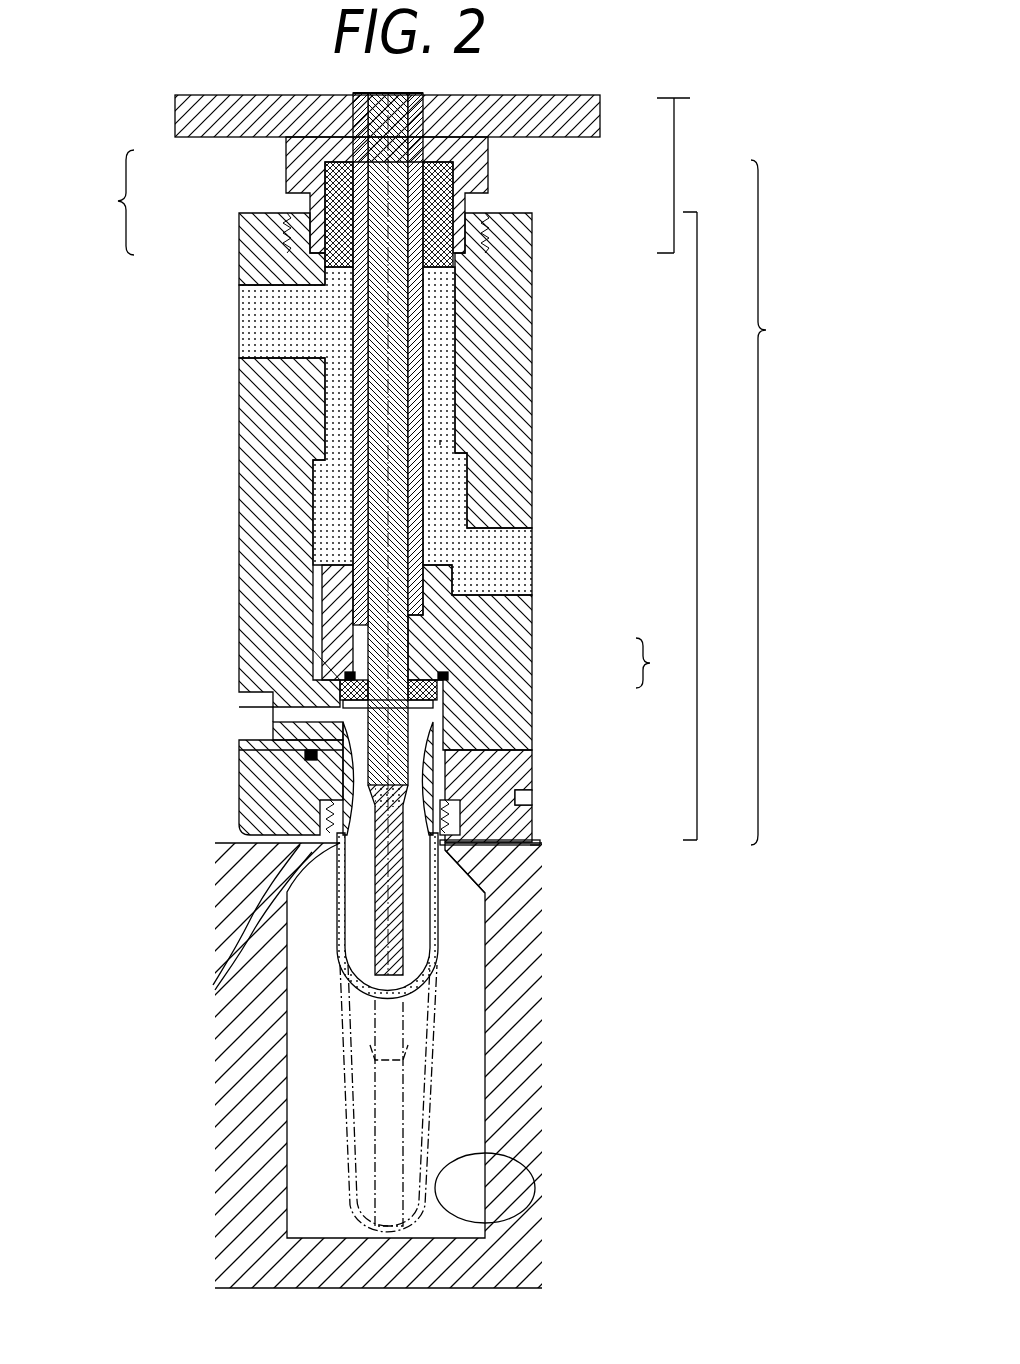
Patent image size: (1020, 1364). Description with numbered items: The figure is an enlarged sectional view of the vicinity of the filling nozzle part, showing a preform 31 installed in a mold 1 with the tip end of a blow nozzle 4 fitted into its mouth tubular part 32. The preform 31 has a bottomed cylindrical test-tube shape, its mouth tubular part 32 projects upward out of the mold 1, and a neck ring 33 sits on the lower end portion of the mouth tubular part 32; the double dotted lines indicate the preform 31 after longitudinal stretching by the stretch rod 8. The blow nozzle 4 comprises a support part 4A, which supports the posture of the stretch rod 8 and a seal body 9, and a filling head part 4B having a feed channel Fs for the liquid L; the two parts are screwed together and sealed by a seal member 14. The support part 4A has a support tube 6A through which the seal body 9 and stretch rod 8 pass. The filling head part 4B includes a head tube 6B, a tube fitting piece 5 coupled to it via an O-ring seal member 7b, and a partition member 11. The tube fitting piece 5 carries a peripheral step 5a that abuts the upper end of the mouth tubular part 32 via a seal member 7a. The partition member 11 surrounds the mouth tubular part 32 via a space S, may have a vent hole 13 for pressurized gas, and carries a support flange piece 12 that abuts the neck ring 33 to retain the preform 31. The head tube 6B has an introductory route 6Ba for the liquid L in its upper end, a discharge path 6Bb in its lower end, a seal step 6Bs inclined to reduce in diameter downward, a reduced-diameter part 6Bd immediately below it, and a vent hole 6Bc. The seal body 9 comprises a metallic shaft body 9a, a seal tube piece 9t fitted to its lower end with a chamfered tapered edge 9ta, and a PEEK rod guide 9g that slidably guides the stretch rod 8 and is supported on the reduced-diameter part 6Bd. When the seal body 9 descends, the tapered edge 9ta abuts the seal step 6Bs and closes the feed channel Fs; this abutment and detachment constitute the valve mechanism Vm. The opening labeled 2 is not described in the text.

The mold 1 is at (513, 1170).
The opening 2 is at (505, 1225).
The blow nozzle 4 is at (769, 502).
The support part 4A is at (674, 170).
The filling head part 4B is at (712, 526).
The tube fitting piece 5 is at (275, 723).
The peripheral step 5a is at (305, 751).
The support tube 6A is at (205, 125).
The head tube 6B is at (260, 565).
The introductory route 6Ba is at (250, 328).
The discharge path 6Bb is at (530, 556).
The vent hole 6Bc is at (255, 729).
The reduced-diameter part 6Bd is at (343, 690).
The seal step 6Bs is at (443, 678).
The seal member (O ring) 7a is at (462, 818).
The seal member (O ring) 7b is at (528, 753).
The stretch rod 8 is at (370, 140).
The seal body 9 is at (111, 202).
The shaft body 9a is at (355, 118).
The seal tube piece 9t is at (337, 563).
The tapered edge 9ta is at (435, 693).
The rod guide 9g is at (420, 706).
The partition member 11 is at (240, 825).
The support flange piece 12 is at (525, 853).
The vent hole 13 is at (525, 797).
The seal member 14 is at (440, 185).
The preform 31 is at (440, 930).
The mouth tubular part 32 is at (530, 846).
The neck ring 33 is at (225, 978).
The liquid L is at (440, 290).
The feed channel Fs is at (440, 440).
The space S is at (475, 833).
The valve mechanism Vm is at (665, 663).